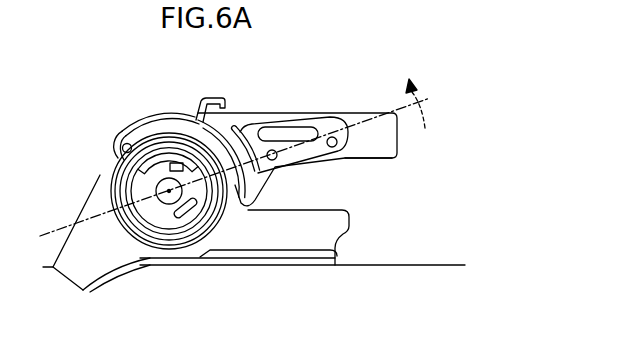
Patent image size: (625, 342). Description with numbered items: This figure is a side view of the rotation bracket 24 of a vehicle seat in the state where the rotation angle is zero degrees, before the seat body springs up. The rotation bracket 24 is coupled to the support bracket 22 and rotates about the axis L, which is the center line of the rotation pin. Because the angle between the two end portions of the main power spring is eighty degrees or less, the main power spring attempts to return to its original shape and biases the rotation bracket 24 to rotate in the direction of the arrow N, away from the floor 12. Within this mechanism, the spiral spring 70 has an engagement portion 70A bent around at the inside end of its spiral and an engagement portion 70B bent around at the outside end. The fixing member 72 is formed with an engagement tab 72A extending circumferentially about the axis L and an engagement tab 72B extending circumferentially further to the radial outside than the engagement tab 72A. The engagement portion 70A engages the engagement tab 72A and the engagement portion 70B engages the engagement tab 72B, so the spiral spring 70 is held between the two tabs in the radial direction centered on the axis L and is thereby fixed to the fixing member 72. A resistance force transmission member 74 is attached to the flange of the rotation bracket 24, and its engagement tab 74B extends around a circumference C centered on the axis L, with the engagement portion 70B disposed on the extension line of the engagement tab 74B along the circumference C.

The floor 12 is at (449, 263).
The support bracket 22 is at (351, 232).
The rotation bracket 24 is at (370, 160).
The spiral spring 70 is at (185, 125).
The engagement portion 70A is at (163, 135).
The engagement portion 70B is at (226, 138).
The fixing member 72 is at (108, 171).
The engagement tab 72A is at (199, 180).
The engagement tab 72B is at (189, 112).
The resistance force transmission member 74 is at (301, 132).
The engagement tab 74B is at (238, 127).
The circumference C is at (253, 188).
The axis L is at (168, 195).
The arrow N is at (425, 118).